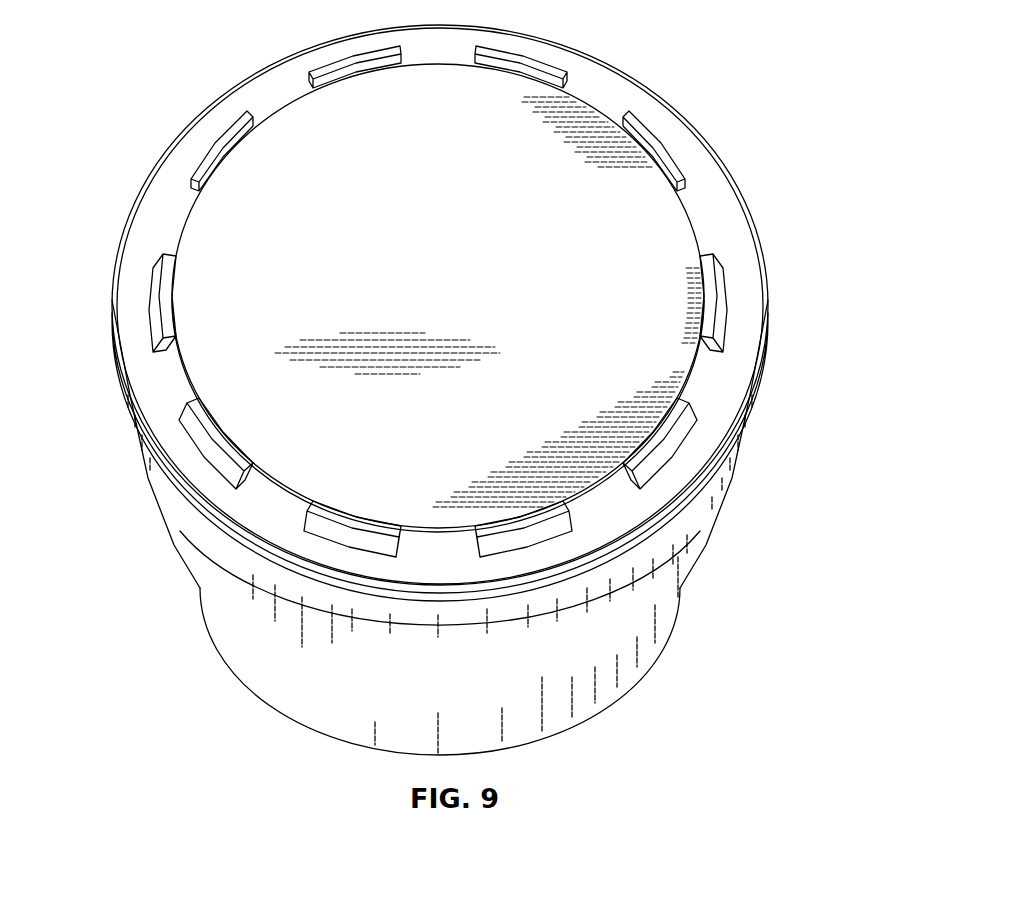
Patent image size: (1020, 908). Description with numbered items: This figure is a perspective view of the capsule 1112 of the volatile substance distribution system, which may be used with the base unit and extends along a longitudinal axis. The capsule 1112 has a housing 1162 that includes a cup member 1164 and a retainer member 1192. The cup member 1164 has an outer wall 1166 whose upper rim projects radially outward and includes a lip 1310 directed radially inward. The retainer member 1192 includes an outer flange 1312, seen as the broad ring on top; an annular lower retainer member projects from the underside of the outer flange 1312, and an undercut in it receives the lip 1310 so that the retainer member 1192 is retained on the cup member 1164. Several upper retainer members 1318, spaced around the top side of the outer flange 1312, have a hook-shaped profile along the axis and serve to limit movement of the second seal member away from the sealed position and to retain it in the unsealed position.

The capsule 1112 is at (150, 92).
The outer flange 1312 is at (722, 201).
The retainer member 1192 is at (748, 364).
The lip 1310 is at (158, 478).
The housing 1162 is at (704, 533).
The cup member 1164 is at (679, 579).
The outer wall 1166 is at (493, 688).
The upper retainer members 1318 is at (365, 68).